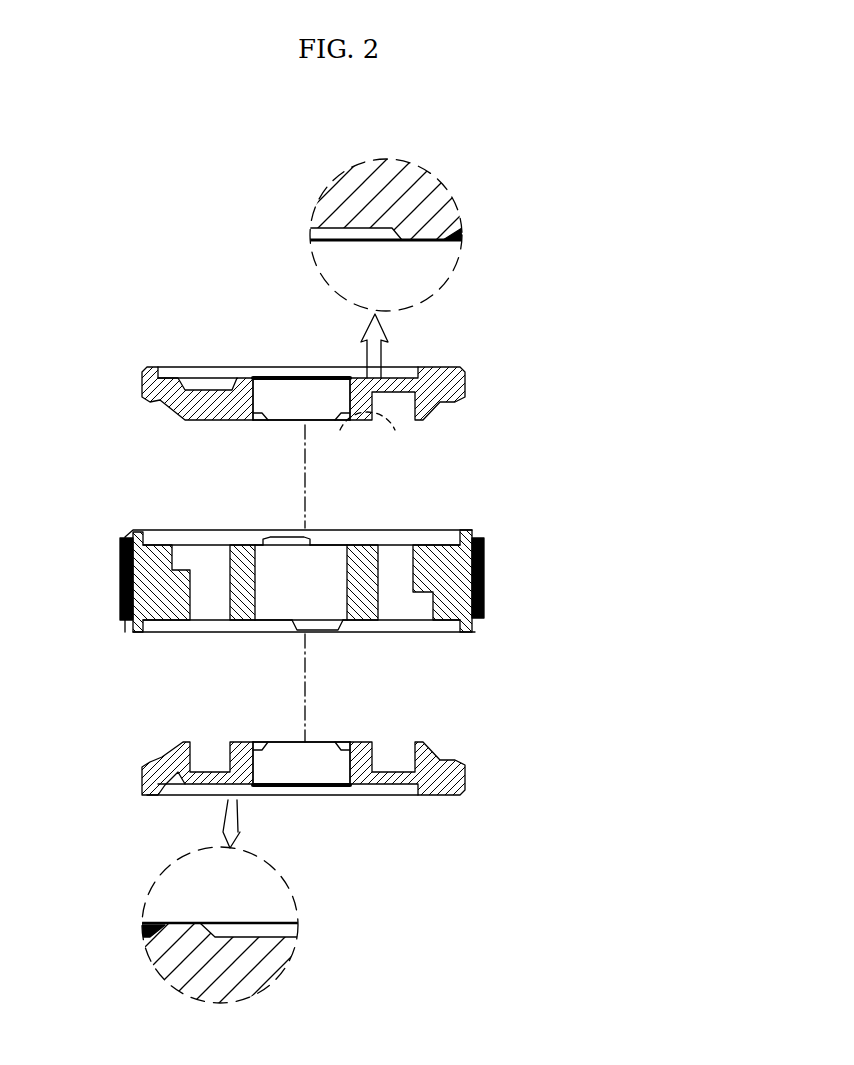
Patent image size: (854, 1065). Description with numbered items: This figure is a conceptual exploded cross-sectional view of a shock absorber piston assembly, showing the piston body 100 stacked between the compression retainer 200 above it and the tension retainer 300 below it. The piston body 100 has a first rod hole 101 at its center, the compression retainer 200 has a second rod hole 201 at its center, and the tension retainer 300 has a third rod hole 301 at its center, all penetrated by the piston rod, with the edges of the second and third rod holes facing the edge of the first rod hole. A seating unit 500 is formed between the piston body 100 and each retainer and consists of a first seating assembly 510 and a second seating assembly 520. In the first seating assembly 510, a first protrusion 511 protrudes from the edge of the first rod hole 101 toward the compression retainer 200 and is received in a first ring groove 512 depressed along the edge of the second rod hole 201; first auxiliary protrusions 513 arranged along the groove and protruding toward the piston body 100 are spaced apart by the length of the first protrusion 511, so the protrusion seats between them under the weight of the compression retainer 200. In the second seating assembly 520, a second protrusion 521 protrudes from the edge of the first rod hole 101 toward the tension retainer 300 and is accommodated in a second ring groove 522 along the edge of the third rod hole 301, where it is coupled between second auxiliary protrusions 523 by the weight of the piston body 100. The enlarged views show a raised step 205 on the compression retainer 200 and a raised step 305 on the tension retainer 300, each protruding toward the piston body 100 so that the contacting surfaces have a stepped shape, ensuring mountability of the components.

The piston body 100 is at (488, 578).
The first rod hole 101 is at (296, 593).
The compression retainer 200 is at (140, 380).
The second rod hole 201 is at (273, 377).
The raised step 205 is at (428, 242).
The tension retainer 300 is at (140, 786).
The third rod hole 301 is at (343, 787).
The raised step 305 is at (185, 920).
The seating unit 500 is at (516, 490).
The first seating assembly 510 is at (415, 513).
The first protrusion 511 is at (290, 532).
The first ring groove 512 is at (285, 422).
The first auxiliary protrusions 513 is at (258, 420).
The second seating assembly 520 is at (432, 652).
The second protrusion 521 is at (330, 632).
The second ring groove 522 is at (305, 742).
The second auxiliary protrusions 523 is at (265, 742).